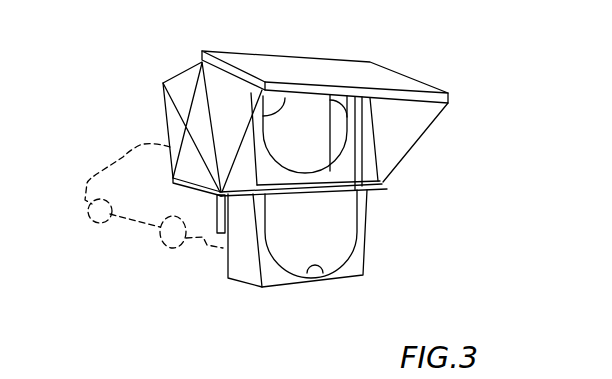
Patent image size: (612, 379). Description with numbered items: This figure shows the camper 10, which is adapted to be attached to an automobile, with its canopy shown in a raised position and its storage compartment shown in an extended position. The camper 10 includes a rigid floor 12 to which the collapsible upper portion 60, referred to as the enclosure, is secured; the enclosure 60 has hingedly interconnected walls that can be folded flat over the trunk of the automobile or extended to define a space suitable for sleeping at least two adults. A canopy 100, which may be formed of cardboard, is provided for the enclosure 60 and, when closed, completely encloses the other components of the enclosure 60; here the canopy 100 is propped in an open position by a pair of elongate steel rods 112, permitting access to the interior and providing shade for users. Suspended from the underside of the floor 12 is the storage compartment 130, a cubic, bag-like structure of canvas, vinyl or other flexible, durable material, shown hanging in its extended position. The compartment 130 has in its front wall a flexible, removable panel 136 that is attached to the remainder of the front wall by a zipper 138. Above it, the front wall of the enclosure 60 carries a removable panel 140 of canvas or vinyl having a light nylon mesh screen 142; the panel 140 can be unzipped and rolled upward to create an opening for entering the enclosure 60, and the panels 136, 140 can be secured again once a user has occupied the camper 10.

The camper 10 is at (398, 42).
The rigid floor 12 is at (176, 187).
The collapsible upper portion 60 is at (148, 92).
The canopy 100 is at (425, 72).
The elongate steel rods 112 is at (423, 127).
The storage compartment 130 is at (412, 235).
The removable panel 136 is at (333, 243).
The zipper 138 is at (323, 271).
The removable panel 140 is at (347, 170).
The screen 142 is at (297, 157).